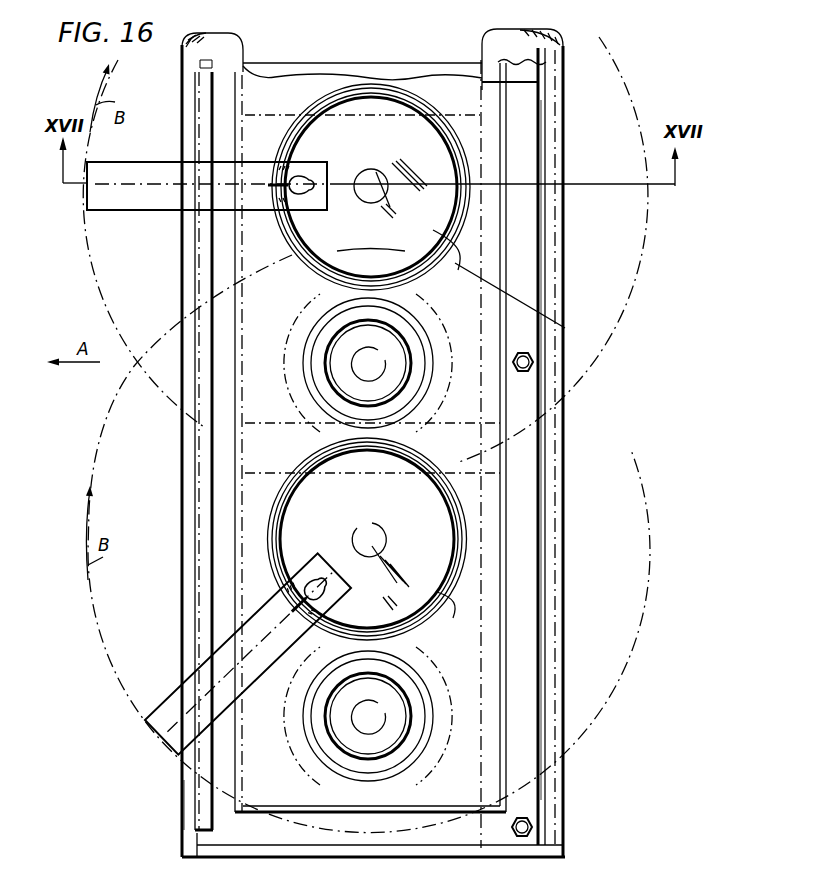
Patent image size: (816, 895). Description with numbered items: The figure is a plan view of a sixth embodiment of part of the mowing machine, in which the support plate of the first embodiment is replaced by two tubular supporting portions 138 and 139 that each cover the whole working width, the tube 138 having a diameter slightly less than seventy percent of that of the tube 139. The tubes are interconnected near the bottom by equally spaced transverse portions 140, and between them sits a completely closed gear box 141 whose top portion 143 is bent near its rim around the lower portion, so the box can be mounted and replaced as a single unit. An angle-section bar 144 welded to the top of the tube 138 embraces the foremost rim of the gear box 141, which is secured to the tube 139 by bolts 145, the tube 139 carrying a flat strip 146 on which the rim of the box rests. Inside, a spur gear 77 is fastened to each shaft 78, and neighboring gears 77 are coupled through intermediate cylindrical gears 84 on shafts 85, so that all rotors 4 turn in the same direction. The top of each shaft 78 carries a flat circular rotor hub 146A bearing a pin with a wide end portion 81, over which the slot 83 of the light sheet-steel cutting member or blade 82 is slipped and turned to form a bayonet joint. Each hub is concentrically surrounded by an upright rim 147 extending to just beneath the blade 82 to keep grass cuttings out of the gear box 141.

The rotor 4 is at (103, 292).
The spur gear 77 is at (318, 229).
The shaft 78 is at (375, 168).
The wide end portion 81 is at (318, 172).
The cutting member or blade 82 is at (158, 152).
The slot 83 is at (268, 186).
The cylindrical gear 84 is at (297, 387).
The shaft 85 is at (381, 352).
The tubular supporting portion 138 is at (242, 52).
The tubular supporting portion 139 is at (490, 47).
The transverse portion 140 is at (384, 58).
The gear box 141 is at (518, 631).
The top portion 143 is at (253, 578).
The angle-section iron or steel bar 144 is at (207, 795).
The bolt 145 is at (530, 360).
The flat strip 146 is at (543, 492).
The rotor hub 146A is at (499, 437).
The upright rim 147 is at (165, 335).